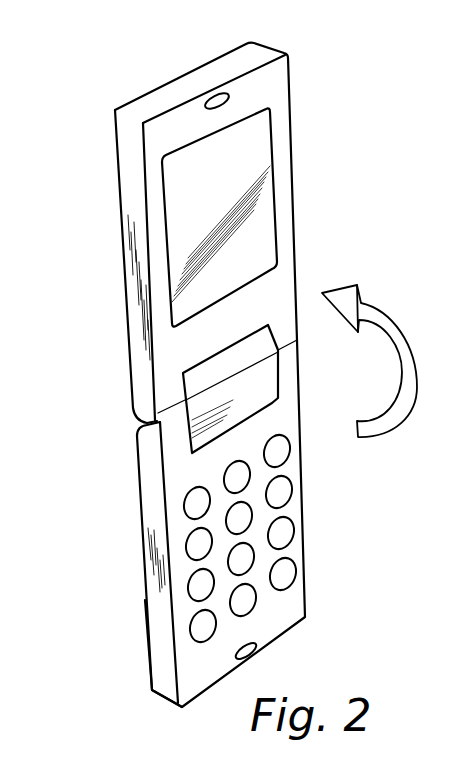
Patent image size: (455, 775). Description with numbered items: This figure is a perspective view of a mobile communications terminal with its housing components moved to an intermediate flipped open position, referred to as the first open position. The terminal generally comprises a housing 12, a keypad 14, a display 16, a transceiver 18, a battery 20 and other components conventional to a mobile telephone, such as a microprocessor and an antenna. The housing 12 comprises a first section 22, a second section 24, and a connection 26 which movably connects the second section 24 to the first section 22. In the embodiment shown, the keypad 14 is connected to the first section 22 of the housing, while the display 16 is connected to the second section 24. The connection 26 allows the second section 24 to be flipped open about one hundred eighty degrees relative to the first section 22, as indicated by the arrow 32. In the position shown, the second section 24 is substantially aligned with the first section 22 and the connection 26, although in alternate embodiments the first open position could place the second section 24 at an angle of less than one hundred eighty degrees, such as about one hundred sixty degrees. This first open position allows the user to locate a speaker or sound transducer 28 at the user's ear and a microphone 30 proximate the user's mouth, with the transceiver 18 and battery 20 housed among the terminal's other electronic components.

The housing 12 is at (288, 91).
The keypad 14 is at (281, 533).
The display 16 is at (226, 180).
The transceiver 18 is at (150, 532).
The battery 20 is at (160, 618).
The first section 22 is at (304, 492).
The second section 24 is at (145, 272).
The connection 26 is at (252, 383).
The speaker or sound transducer 28 is at (223, 100).
The microphone 30 is at (234, 667).
The arrow 32 is at (400, 333).